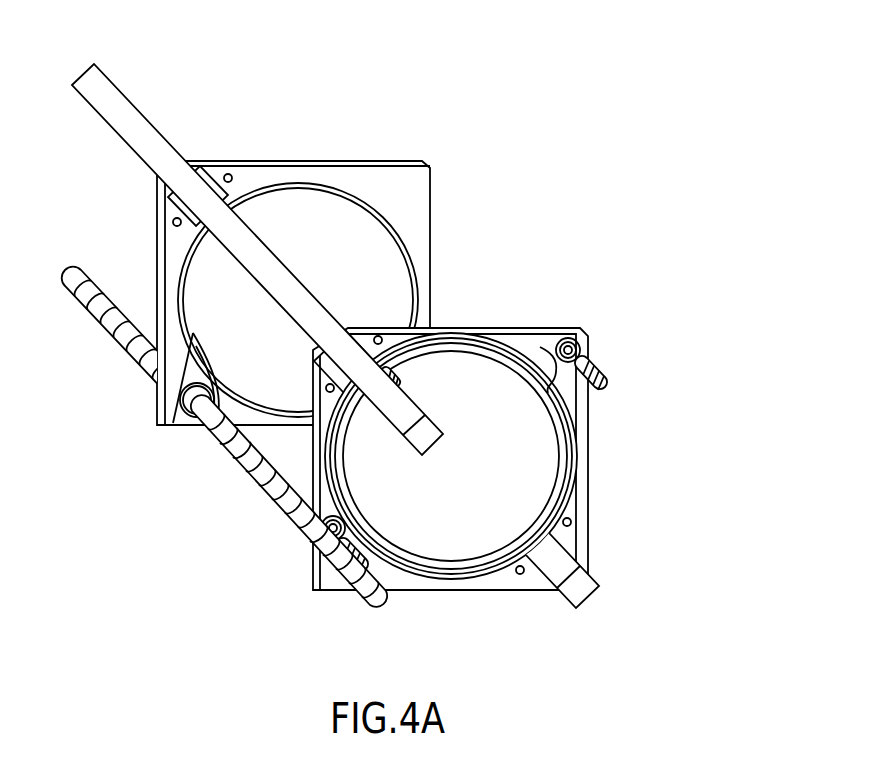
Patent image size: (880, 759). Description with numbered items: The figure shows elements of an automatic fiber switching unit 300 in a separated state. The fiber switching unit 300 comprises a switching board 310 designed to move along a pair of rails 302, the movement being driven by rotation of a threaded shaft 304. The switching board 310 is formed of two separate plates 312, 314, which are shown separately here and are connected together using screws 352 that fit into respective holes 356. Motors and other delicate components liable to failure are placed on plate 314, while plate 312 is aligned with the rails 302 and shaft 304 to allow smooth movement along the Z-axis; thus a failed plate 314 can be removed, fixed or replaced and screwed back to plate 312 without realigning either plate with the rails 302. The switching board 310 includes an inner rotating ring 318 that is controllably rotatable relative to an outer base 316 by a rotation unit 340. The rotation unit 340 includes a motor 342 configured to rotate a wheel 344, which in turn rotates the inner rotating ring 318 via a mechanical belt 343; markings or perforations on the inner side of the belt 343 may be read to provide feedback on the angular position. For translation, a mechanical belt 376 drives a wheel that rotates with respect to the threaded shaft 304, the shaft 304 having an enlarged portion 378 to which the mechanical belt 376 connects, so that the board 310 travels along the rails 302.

The automatic fiber switching unit 300 is at (657, 81).
The rails 302 is at (113, 82).
The threaded shaft 304 is at (240, 453).
The switching board 310 is at (511, 382).
The plate 312 is at (397, 180).
The plate 314 is at (582, 410).
The outer base 316 is at (534, 590).
The inner rotating ring 318 is at (517, 380).
The rotation unit 340 is at (527, 422).
The motor 342 is at (595, 350).
The mechanical belt 343 is at (514, 328).
The wheel 344 is at (572, 343).
The screws 352 is at (170, 195).
The holes 356 is at (378, 340).
The mechanical belt 376 is at (180, 383).
The enlarged portion 378 is at (203, 414).